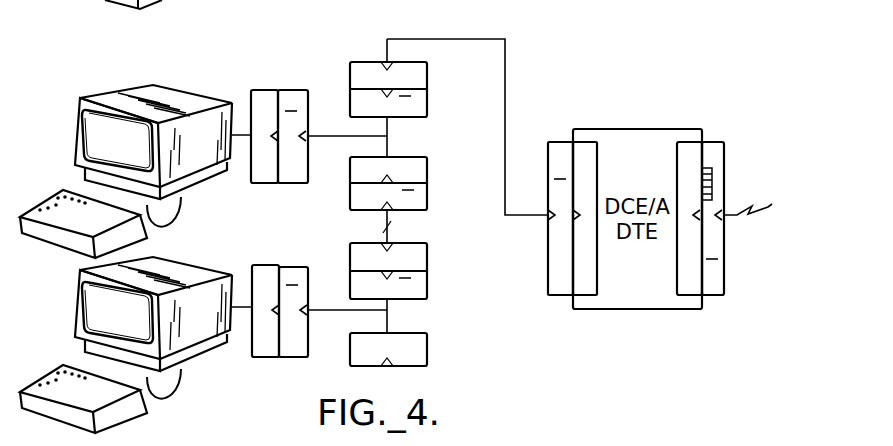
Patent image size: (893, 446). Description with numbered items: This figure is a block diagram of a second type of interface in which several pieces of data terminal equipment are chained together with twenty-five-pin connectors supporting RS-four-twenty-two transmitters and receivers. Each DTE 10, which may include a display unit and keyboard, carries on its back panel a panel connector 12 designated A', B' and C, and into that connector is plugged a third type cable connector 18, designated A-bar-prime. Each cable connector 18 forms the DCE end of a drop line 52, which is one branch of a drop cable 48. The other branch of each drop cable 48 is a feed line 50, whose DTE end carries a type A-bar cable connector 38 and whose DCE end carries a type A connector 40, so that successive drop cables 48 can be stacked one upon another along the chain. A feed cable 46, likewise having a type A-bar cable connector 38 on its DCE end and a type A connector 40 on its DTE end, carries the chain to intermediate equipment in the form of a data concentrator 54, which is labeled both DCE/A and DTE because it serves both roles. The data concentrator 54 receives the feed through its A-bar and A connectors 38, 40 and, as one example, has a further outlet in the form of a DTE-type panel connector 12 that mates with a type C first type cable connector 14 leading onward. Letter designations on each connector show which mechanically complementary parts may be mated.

The data terminal equipment 10 is at (184, 87).
The panel connector 12 is at (263, 87).
The third type cable connector 18 is at (293, 87).
The drop line 52 is at (314, 139).
The feed cable 46 is at (435, 39).
The type A connector 40 is at (430, 78).
The type A-bar cable connector 38 is at (430, 101).
The drop cable 48 is at (392, 131).
The feed line 50 is at (391, 151).
The data concentrator 54 is at (691, 139).
The first type cable connector 14 is at (726, 185).